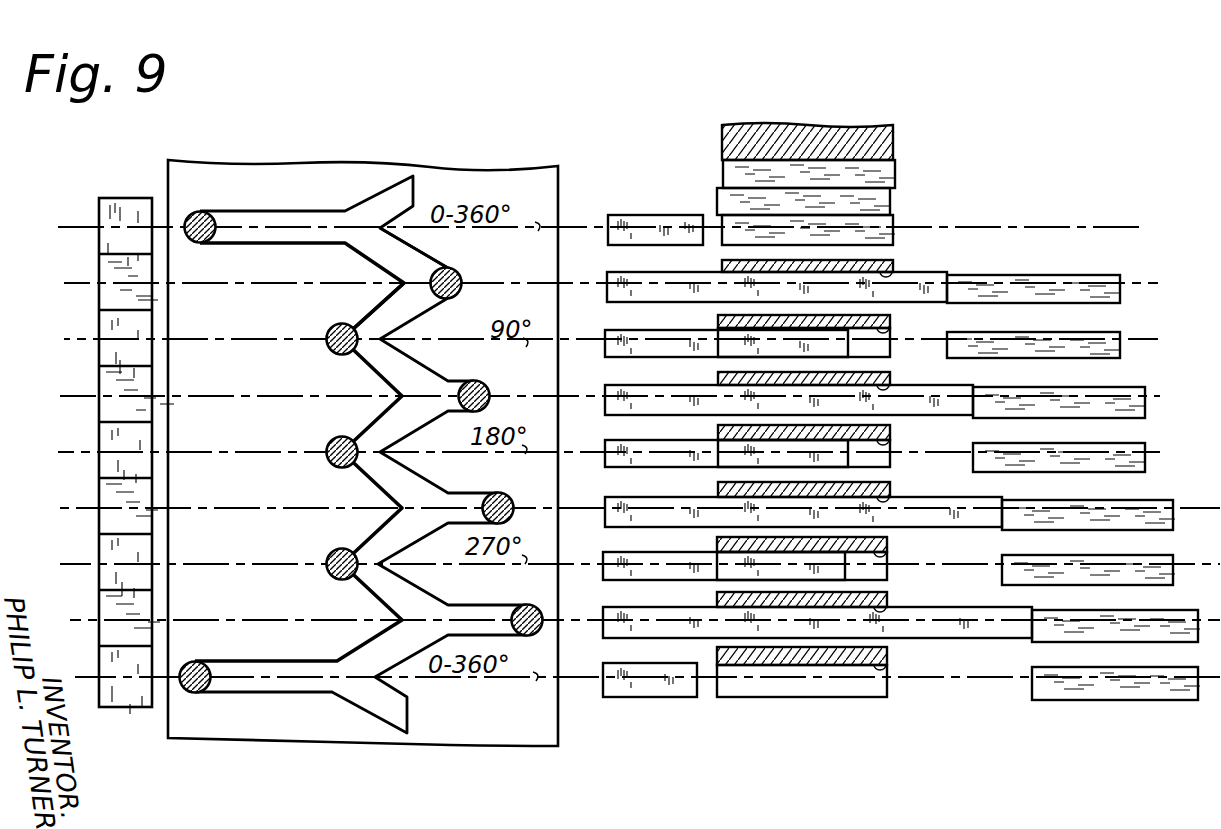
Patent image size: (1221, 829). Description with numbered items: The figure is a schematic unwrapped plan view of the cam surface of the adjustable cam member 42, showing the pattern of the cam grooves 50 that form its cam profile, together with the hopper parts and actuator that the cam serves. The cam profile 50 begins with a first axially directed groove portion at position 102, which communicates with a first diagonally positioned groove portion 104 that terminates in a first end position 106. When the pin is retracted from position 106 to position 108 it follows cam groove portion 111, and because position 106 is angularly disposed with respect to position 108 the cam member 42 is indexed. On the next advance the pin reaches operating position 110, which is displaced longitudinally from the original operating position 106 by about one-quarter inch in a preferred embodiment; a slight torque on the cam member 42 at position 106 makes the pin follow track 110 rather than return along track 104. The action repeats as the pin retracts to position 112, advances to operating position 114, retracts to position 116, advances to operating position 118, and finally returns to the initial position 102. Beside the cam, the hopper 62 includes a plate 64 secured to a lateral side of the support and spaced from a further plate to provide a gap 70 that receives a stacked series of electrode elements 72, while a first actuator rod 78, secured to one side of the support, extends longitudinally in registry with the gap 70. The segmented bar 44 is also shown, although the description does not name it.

The cam member 42 is at (345, 174).
The segmented bar 44 is at (106, 240).
The cam grooves 50 is at (361, 454).
The hopper 62 is at (803, 164).
The plate 64 is at (752, 100).
The gap 70 is at (790, 167).
The electrode elements 72 is at (893, 218).
The first actuator rod 78 is at (622, 320).
The first axially directed groove portion 102 is at (236, 222).
The first diagonally positioned groove portion 104 is at (428, 266).
The first end position 106 is at (462, 282).
The position 108 is at (333, 352).
The operating position 110 is at (498, 383).
The cam groove portion 111 is at (372, 310).
The position 112 is at (328, 462).
The operating position 114 is at (526, 491).
The position 116 is at (330, 574).
The operating position 118 is at (546, 597).